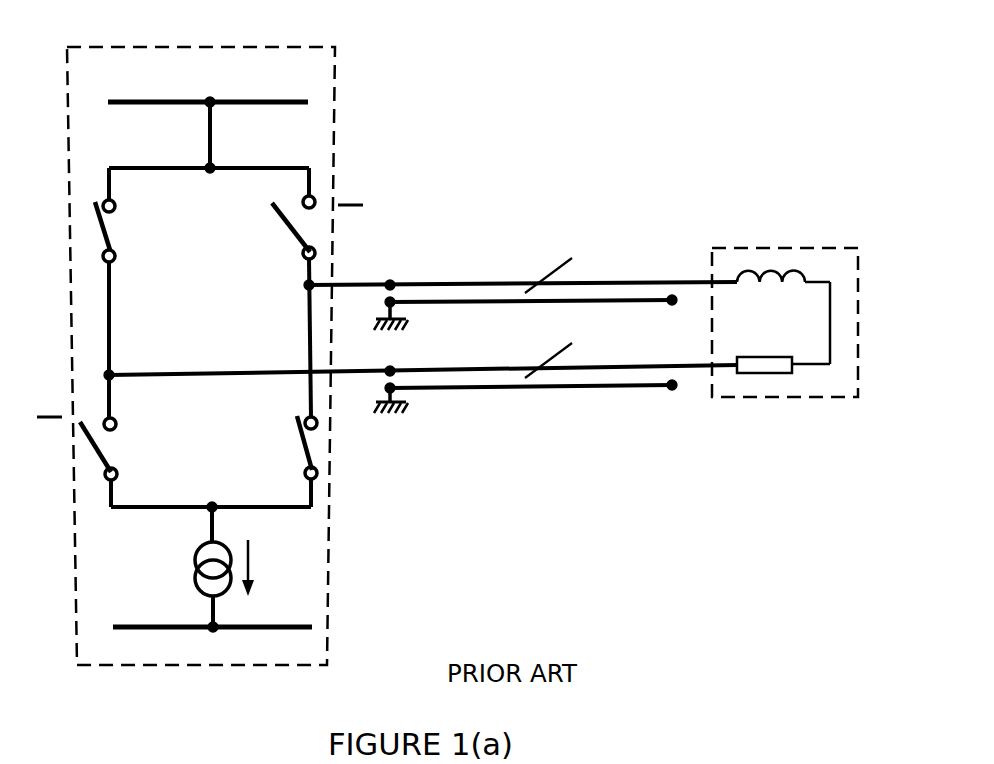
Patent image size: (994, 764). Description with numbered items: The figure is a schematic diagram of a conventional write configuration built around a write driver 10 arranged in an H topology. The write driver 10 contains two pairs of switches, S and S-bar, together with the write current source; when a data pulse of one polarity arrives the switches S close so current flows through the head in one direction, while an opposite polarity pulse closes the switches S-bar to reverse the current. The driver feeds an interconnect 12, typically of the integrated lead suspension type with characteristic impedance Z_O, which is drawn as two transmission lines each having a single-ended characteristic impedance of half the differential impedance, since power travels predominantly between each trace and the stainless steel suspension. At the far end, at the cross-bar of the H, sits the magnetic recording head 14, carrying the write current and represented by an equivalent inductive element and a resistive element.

The write driver 10 is at (347, 155).
The interconnect 12 is at (562, 194).
The magnetic recording head 14 is at (773, 238).